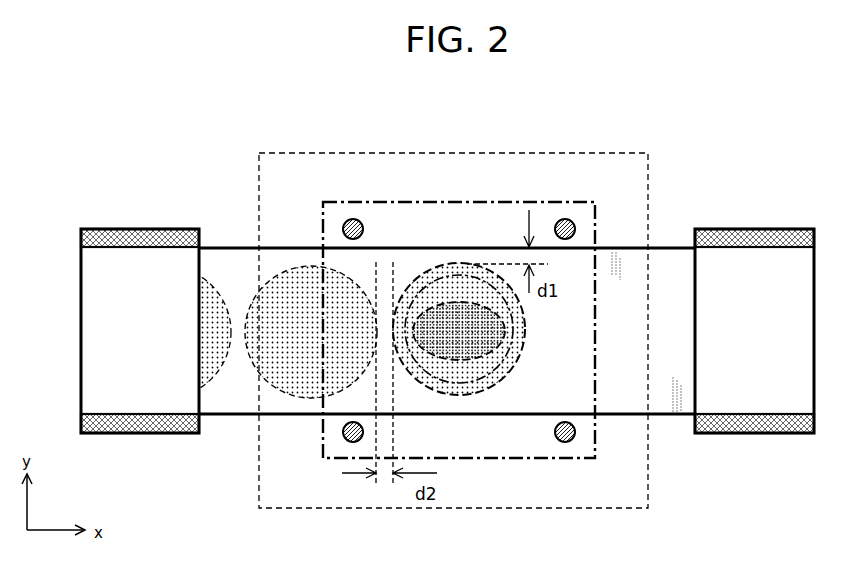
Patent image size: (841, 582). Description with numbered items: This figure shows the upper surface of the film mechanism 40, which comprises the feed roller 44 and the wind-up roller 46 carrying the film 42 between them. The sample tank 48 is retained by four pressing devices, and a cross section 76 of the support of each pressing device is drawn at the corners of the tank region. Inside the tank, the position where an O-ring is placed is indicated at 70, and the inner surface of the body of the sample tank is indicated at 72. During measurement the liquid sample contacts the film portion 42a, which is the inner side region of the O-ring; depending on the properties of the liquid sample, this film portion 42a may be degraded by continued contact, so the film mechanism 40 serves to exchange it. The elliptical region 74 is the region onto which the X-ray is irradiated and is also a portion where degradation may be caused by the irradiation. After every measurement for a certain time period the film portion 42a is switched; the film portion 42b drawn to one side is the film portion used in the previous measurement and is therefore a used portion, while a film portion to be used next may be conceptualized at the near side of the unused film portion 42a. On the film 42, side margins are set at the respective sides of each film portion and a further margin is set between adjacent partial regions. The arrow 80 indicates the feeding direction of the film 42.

The film mechanism 40 is at (533, 117).
The film 42 is at (230, 246).
The film portion 42a is at (457, 373).
The film portion 42b is at (288, 372).
The feed roller 44 is at (749, 229).
The wind-up roller 46 is at (143, 228).
The sample tank 48 is at (478, 198).
The O-ring position 70 is at (525, 352).
The inner surface of body of sample tank 72 is at (497, 372).
The elliptical region 74 is at (425, 291).
The cross section of support of pressing device 76 is at (575, 225).
The feeding direction 80 is at (488, 235).